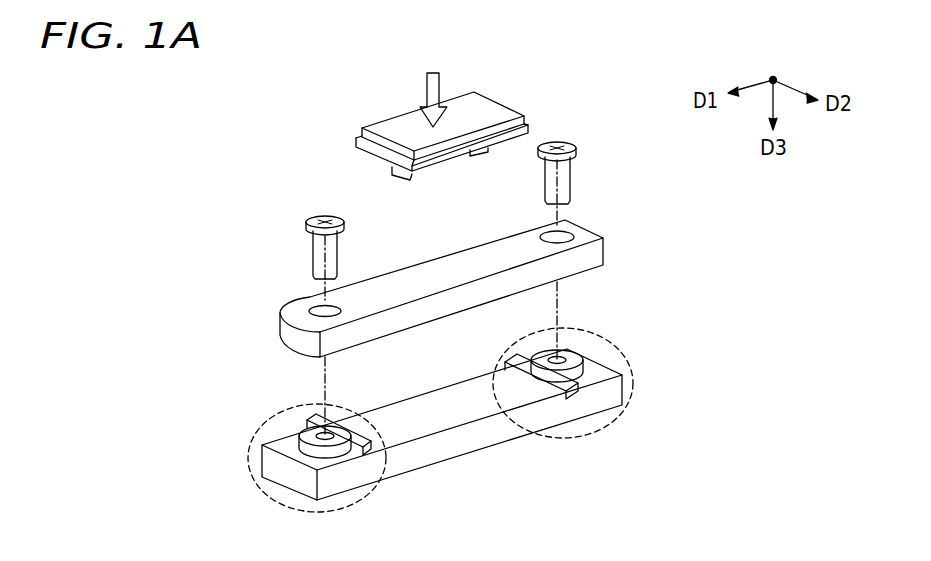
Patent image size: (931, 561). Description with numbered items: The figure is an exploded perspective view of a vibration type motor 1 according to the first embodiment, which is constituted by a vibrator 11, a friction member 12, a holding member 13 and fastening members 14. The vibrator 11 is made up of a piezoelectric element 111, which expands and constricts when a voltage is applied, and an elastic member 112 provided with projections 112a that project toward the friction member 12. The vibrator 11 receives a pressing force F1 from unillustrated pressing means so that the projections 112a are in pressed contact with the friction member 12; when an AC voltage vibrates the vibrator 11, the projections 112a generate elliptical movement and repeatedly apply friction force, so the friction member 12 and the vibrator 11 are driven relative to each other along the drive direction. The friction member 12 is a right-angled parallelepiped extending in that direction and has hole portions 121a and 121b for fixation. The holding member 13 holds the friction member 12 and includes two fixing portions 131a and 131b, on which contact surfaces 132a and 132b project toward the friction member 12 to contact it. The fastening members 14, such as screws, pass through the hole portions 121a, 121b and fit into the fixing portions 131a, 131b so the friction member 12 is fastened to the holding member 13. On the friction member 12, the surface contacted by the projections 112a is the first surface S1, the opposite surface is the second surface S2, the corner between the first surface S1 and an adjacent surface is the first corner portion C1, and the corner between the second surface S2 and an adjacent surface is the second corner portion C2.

The vibration type motor 1 is at (196, 110).
The vibrator 11 is at (330, 146).
The piezoelectric element 111 is at (398, 122).
The elastic member 112 is at (530, 126).
The projections 112a is at (484, 160).
The friction member 12 is at (444, 304).
The hole portion 121a is at (290, 306).
The hole portion 121b is at (575, 231).
The holding member 13 is at (497, 432).
The fixing portion 131a is at (275, 415).
The fixing portion 131b is at (628, 420).
The contact surface 132a is at (300, 433).
The contact surface 132b is at (584, 358).
The fastening members 14 is at (312, 246).
The pressing force F1 is at (433, 87).
The first surface S1 is at (390, 297).
The second surface S2 is at (450, 328).
The first corner portion C1 is at (442, 292).
The second corner portion C2 is at (393, 340).